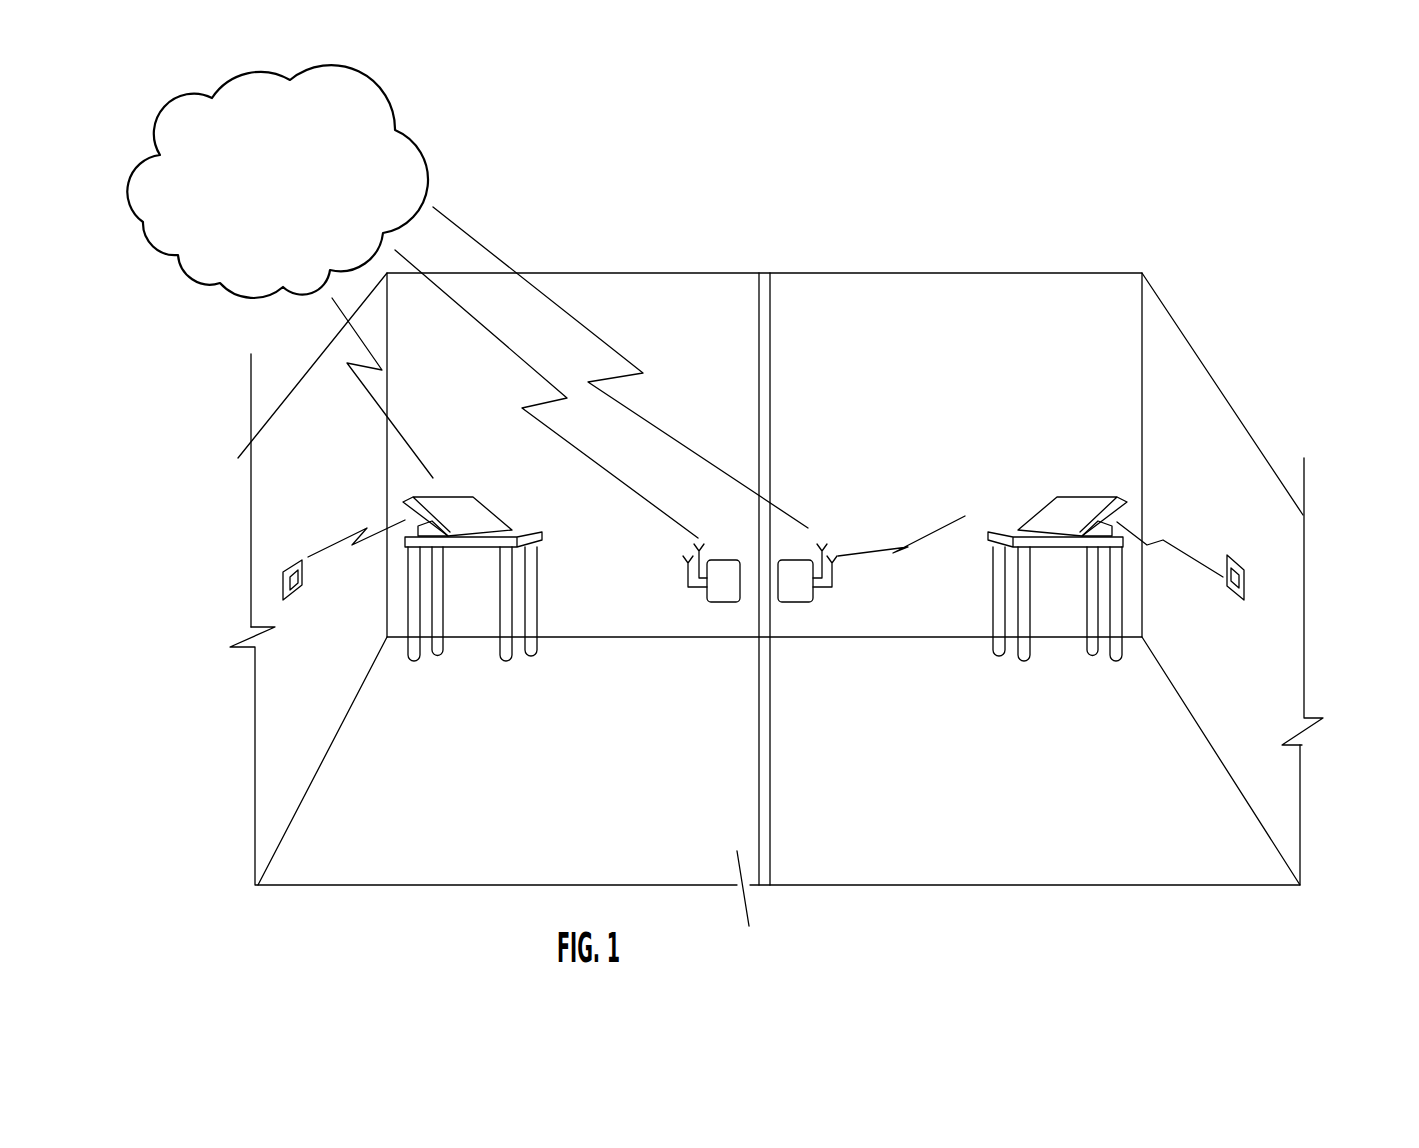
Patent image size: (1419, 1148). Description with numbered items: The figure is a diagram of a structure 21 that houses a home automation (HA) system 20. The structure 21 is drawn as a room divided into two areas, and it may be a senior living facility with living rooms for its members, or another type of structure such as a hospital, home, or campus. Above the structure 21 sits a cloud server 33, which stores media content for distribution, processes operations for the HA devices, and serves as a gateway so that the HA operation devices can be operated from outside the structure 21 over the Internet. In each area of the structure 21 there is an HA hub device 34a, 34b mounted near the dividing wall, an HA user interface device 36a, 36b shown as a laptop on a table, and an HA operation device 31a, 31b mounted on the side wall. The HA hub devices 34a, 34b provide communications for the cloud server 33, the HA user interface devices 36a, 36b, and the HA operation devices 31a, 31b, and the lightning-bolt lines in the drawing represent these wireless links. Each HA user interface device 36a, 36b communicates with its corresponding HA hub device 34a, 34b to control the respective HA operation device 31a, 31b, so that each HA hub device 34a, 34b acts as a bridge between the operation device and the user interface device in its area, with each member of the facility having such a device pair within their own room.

The home automation (HA) system 20 is at (621, 154).
The structure 21 is at (1118, 249).
The cloud server 33 is at (150, 160).
The HA hub device 34a is at (722, 575).
The HA hub device 34b is at (798, 592).
The HA user interface device 36a is at (432, 507).
The HA user interface device 36b is at (1093, 507).
The HA operation device 31a is at (282, 573).
The HA operation device 31b is at (1245, 583).